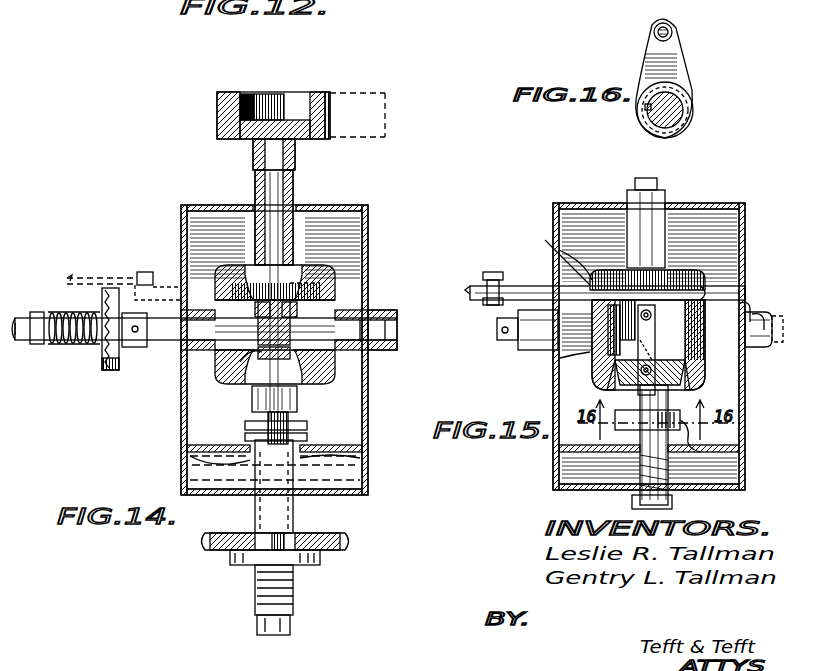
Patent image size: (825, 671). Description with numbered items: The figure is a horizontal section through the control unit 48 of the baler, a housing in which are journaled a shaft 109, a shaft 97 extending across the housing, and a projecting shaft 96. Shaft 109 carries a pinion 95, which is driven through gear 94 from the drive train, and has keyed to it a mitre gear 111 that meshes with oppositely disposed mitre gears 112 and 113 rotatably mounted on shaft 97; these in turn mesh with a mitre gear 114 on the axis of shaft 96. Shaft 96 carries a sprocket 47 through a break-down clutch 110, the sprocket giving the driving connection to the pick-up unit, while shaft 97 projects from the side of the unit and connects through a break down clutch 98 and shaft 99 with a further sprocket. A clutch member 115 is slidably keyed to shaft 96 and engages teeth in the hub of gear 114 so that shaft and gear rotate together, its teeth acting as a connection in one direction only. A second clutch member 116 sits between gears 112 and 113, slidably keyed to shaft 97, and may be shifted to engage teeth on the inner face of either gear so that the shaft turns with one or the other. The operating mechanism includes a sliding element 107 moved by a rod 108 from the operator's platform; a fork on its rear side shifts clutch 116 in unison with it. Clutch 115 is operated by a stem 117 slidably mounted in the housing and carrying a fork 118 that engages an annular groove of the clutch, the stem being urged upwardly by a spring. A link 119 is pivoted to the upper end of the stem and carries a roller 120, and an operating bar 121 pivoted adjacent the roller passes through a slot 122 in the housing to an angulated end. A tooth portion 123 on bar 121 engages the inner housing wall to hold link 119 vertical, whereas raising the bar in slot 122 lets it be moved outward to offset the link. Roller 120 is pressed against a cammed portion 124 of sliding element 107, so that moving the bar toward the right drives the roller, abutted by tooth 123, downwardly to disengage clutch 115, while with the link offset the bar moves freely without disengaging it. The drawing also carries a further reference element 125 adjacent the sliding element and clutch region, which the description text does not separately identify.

In FIG. 14, the sprocket 47 is at (345, 537).
In FIG. 14, the control unit 48 is at (368, 402).
In FIG. 14, the gear 94 is at (360, 137).
In FIG. 14, the pinion 95 is at (330, 93).
In FIG. 14, the projecting shaft 96 is at (285, 540).
In FIG. 14, the shaft 97 is at (146, 348).
In FIG. 15, the shaft 97 is at (497, 338).
In FIG. 14, the break down clutch 98 is at (110, 370).
In FIG. 14, the shaft 99 is at (30, 343).
In FIG. 14, the sliding element 107 is at (160, 284).
In FIG. 15, the sliding element 107 is at (515, 288).
In FIG. 14, the rod 108 is at (85, 278).
In FIG. 15, the rod 108 is at (480, 284).
In FIG. 14, the shaft 109 is at (292, 190).
In FIG. 15, the shaft 109 is at (660, 185).
In FIG. 16, the shaft 109 is at (683, 110).
In FIG. 14, the break-down clutch 110 is at (322, 558).
In FIG. 14, the mitre gear 111 is at (298, 274).
In FIG. 15, the mitre gear 111 is at (670, 282).
In FIG. 14, the mitre gear 112 is at (240, 362).
In FIG. 15, the mitre gear 112 is at (580, 386).
In FIG. 14, the mitre gear 113 is at (364, 262).
In FIG. 15, the mitre gear 113 is at (700, 375).
In FIG. 14, the mitre gear 114 is at (335, 364).
In FIG. 15, the mitre gear 114 is at (698, 392).
In FIG. 14, the clutch member 115 is at (303, 426).
In FIG. 15, the clutch member 115 is at (690, 410).
In FIG. 16, the clutch member 115 is at (690, 130).
In FIG. 14, the second clutch member 116 is at (335, 296).
In FIG. 15, the second clutch member 116 is at (600, 370).
In FIG. 15, the stem 117 is at (620, 480).
In FIG. 16, the stem 117 is at (673, 33).
In FIG. 15, the fork 118 is at (700, 452).
In FIG. 16, the fork 118 is at (690, 80).
In FIG. 14, the link 119 is at (258, 390).
In FIG. 15, the link 119 is at (708, 346).
In FIG. 15, the roller 120 is at (702, 288).
In FIG. 14, the operating bar 121 is at (398, 320).
In FIG. 15, the operating bar 121 is at (760, 345).
In FIG. 15, the slot 122 is at (743, 310).
In FIG. 15, the tooth portion 123 is at (762, 317).
In FIG. 15, the cammed portion 124 is at (545, 240).
In FIG. 15, the spring 125 is at (560, 358).